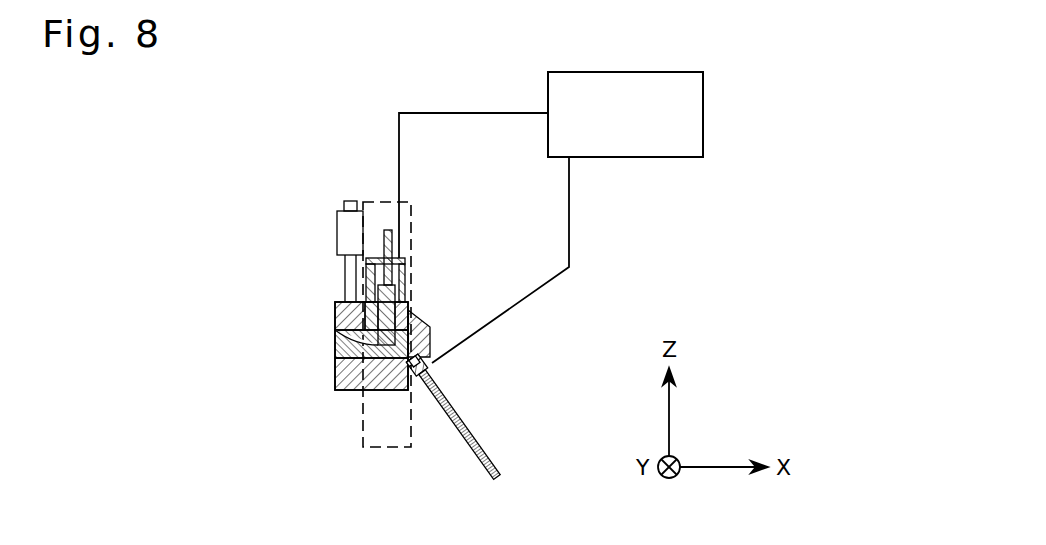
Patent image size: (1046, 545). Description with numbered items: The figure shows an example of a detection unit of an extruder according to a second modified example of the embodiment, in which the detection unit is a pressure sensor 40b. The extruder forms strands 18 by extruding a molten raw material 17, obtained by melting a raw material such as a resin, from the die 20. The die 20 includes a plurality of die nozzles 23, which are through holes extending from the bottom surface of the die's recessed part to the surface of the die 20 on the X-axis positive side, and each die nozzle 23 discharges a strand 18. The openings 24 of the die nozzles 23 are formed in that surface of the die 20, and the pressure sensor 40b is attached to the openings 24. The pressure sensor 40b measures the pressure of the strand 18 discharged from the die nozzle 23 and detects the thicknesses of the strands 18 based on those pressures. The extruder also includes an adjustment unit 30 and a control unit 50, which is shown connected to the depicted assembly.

The molten raw material 17 is at (335, 352).
The strand 18 is at (453, 410).
The die 20 is at (430, 326).
The die nozzle 23 is at (433, 341).
The opening 24 is at (415, 377).
The adjustment unit 30 is at (378, 447).
The pressure sensor 40b is at (437, 365).
The control unit 50 is at (636, 126).